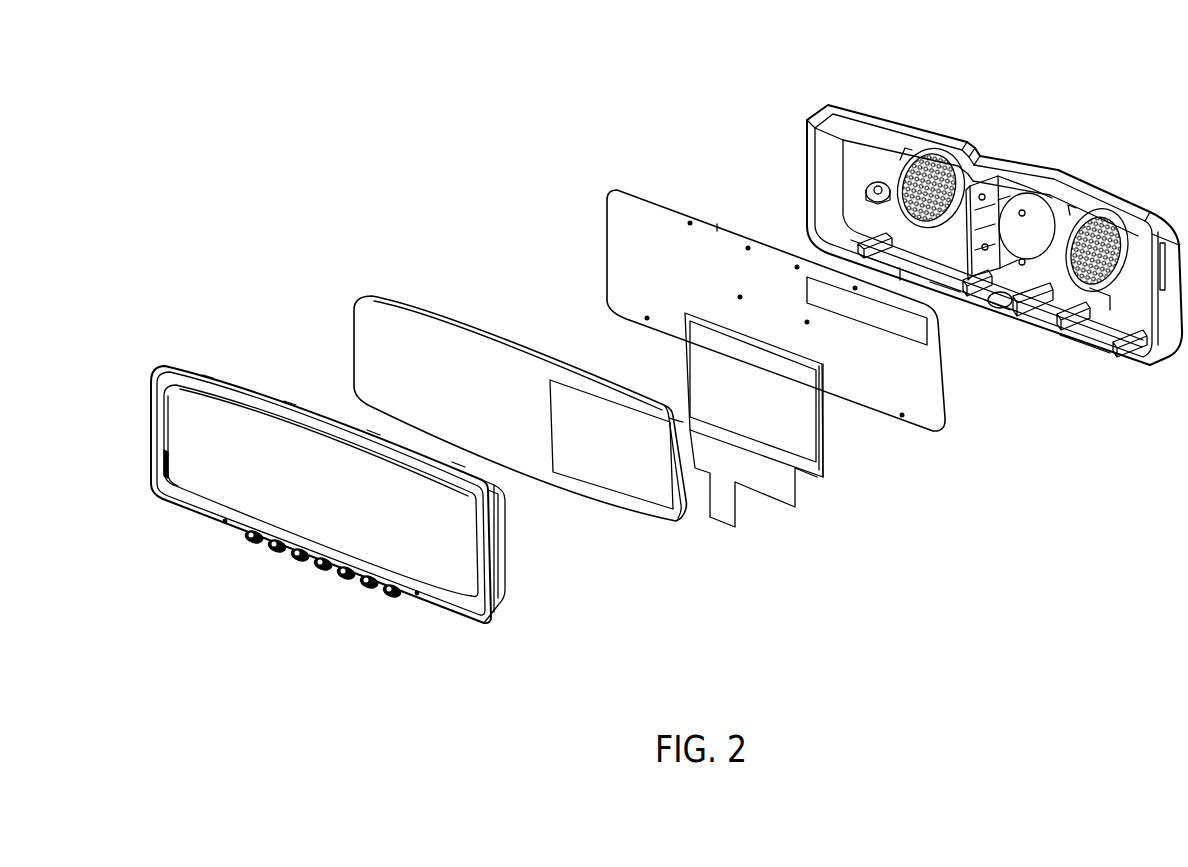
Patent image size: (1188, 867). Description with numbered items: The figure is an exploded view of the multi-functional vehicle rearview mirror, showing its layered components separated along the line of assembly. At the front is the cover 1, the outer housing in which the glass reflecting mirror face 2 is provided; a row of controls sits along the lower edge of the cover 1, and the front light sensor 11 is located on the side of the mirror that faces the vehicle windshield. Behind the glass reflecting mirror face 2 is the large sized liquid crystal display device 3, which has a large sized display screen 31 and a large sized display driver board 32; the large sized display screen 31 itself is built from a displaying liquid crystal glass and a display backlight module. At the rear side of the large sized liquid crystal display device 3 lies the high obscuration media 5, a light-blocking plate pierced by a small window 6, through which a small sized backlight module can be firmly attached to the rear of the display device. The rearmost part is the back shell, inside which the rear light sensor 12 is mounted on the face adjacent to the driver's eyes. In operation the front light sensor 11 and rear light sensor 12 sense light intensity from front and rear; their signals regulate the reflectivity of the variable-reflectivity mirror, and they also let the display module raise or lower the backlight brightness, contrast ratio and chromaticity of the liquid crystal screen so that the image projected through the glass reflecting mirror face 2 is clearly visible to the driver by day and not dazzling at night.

The cover 1 is at (357, 532).
The front light sensor 11 is at (345, 570).
The glass reflecting mirror face 2 is at (385, 338).
The large sized display screen 31 is at (608, 467).
The large sized liquid crystal display device 3 is at (738, 460).
The large sized display driver board 32 is at (823, 400).
The high obscuration media 5 is at (647, 250).
The small window 6 is at (877, 320).
The rear light sensor 12 is at (867, 182).